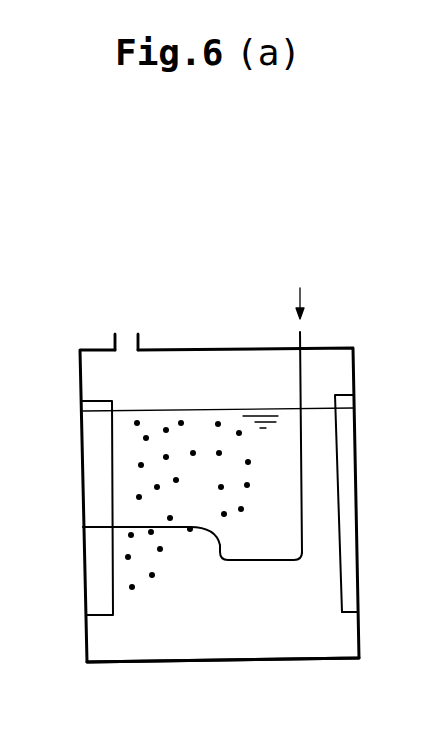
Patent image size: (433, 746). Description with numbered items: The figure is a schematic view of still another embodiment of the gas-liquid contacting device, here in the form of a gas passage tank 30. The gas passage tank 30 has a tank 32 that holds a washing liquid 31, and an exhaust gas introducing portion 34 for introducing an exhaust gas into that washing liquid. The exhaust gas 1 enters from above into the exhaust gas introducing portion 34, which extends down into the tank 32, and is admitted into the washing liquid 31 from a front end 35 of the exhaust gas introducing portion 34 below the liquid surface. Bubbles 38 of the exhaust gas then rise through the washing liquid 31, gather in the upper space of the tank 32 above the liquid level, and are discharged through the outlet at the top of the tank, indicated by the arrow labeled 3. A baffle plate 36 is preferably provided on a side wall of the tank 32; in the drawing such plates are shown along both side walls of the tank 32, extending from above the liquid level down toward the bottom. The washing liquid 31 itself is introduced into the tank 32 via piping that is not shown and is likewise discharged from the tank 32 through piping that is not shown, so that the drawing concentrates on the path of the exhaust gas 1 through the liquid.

The exhaust gas 1 is at (300, 333).
The gas outlet 3 is at (126, 333).
The gas passage tank 30 is at (82, 641).
The washing liquid 31 is at (237, 638).
The tank 32 is at (81, 452).
The exhaust gas introducing portion 34 is at (268, 560).
The front end 35 is at (85, 527).
The baffle plate 36 is at (352, 609).
The bubbles 38 is at (247, 485).